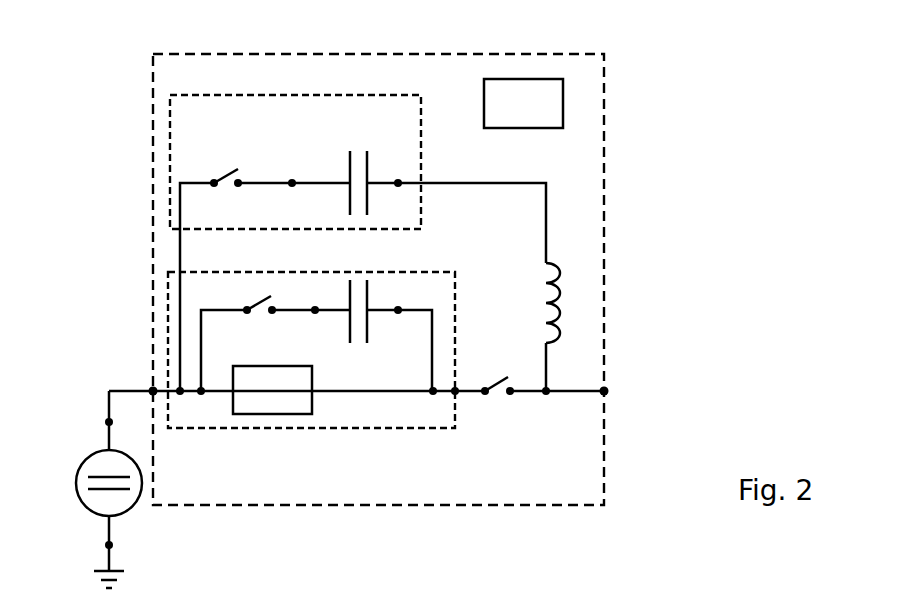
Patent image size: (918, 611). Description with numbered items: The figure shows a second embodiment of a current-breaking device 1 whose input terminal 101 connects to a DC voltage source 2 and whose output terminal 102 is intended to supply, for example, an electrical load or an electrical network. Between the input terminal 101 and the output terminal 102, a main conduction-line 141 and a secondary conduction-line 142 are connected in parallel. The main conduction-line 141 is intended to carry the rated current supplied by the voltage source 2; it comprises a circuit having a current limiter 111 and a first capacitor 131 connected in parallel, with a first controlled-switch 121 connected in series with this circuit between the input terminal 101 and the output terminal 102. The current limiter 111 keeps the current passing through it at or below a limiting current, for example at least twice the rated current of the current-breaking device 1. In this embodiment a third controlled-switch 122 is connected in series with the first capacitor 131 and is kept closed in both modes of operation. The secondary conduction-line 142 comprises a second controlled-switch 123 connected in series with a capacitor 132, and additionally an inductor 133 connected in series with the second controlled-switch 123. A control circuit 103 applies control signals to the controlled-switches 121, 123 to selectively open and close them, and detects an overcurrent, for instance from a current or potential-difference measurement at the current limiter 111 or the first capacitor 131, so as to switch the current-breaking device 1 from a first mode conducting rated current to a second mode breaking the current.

The current-breaking device 1 is at (153, 278).
The DC voltage source 2 is at (76, 483).
The input terminal 101 is at (153, 391).
The output terminal 102 is at (604, 394).
The control circuit 103 is at (522, 79).
The current limiter 111 is at (272, 414).
The first controlled-switch 121 is at (498, 396).
The third controlled-switch 122 is at (259, 297).
The second controlled-switch 123 is at (226, 170).
The first capacitor 131 is at (341, 300).
The capacitor 132 is at (341, 172).
The inductor 133 is at (564, 281).
The main conduction-line 141 is at (456, 354).
The secondary conduction-line 142 is at (168, 161).